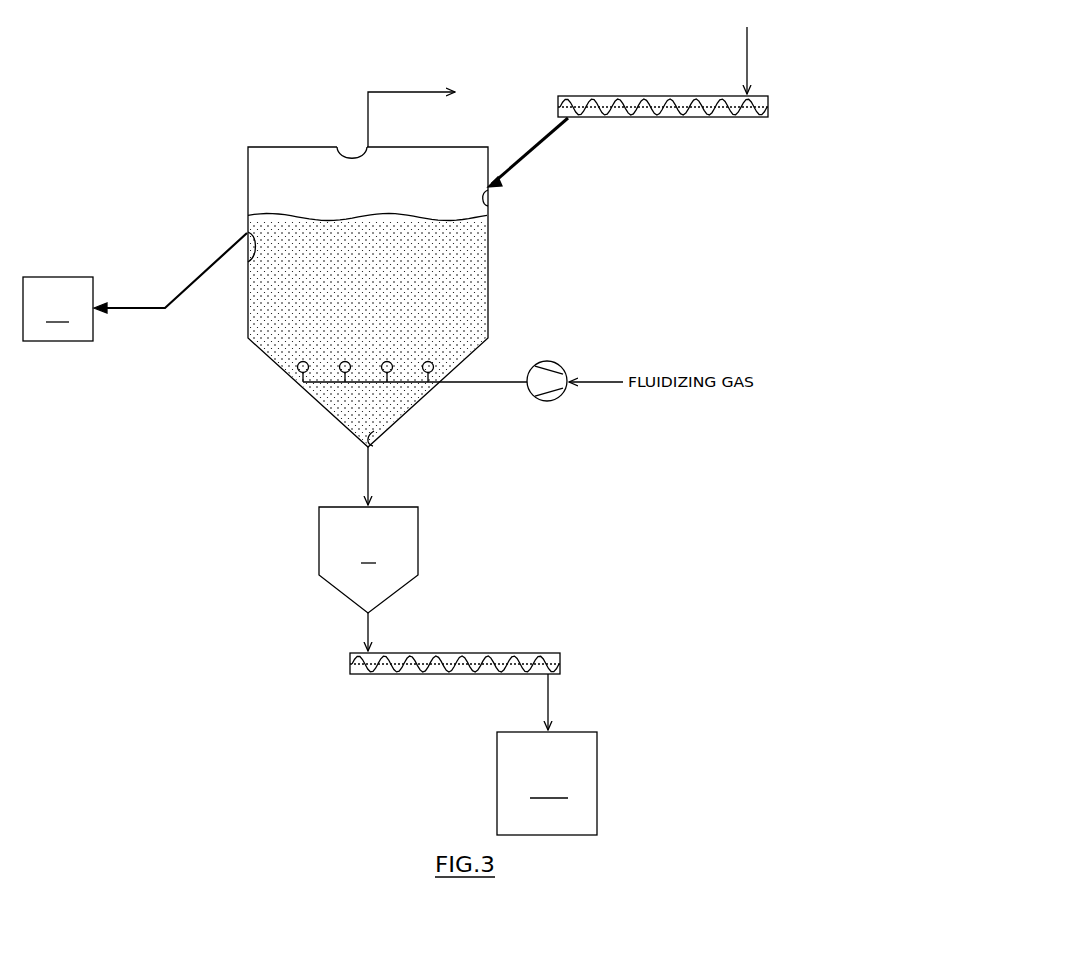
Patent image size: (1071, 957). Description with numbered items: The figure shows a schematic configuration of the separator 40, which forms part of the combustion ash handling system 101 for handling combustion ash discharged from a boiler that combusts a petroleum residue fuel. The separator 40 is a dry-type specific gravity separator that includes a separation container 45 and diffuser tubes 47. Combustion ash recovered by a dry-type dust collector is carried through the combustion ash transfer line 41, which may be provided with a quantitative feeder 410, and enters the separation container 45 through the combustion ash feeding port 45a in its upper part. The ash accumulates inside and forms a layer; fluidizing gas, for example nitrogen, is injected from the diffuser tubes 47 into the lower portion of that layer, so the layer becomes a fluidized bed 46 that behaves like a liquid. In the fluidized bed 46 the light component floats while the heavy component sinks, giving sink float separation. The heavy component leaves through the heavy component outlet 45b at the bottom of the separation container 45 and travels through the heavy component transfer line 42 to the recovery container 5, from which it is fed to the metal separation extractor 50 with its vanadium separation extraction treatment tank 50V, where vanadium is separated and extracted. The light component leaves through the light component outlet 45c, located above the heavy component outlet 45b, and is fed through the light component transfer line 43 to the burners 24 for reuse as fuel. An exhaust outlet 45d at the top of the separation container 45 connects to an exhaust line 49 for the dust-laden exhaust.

The combustion ash handling system 101 is at (680, 678).
The separator 40 is at (590, 443).
The separation container 45 is at (248, 146).
The exhaust outlet 45d is at (340, 152).
The exhaust line 49 is at (378, 91).
The quantitative feeder 410 is at (710, 117).
The combustion ash transfer line 41 is at (543, 143).
The combustion ash feeding port 45a is at (490, 200).
The fluidized bed 46 is at (483, 283).
The light component outlet 45c is at (251, 246).
The light component transfer line 43 is at (147, 310).
The burners 24 is at (58, 309).
The diffuser tubes 47 is at (297, 373).
The heavy component outlet 45b is at (378, 433).
The heavy component transfer line 42 is at (372, 472).
The recovery container 5 is at (368, 560).
The metal separation extractor 50 is at (480, 779).
The vanadium separation extraction treatment tank 50V is at (547, 783).